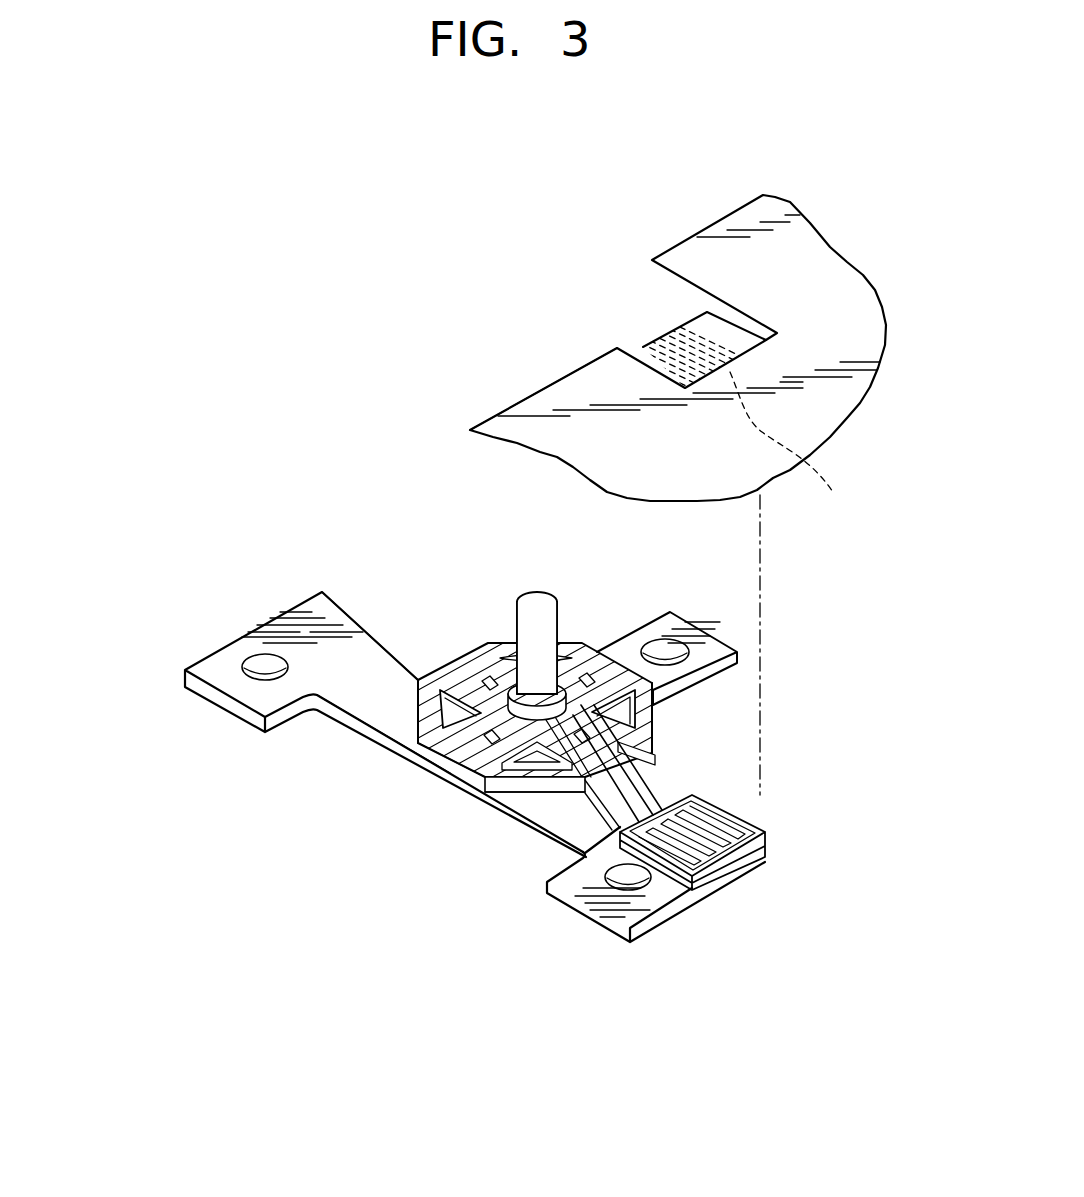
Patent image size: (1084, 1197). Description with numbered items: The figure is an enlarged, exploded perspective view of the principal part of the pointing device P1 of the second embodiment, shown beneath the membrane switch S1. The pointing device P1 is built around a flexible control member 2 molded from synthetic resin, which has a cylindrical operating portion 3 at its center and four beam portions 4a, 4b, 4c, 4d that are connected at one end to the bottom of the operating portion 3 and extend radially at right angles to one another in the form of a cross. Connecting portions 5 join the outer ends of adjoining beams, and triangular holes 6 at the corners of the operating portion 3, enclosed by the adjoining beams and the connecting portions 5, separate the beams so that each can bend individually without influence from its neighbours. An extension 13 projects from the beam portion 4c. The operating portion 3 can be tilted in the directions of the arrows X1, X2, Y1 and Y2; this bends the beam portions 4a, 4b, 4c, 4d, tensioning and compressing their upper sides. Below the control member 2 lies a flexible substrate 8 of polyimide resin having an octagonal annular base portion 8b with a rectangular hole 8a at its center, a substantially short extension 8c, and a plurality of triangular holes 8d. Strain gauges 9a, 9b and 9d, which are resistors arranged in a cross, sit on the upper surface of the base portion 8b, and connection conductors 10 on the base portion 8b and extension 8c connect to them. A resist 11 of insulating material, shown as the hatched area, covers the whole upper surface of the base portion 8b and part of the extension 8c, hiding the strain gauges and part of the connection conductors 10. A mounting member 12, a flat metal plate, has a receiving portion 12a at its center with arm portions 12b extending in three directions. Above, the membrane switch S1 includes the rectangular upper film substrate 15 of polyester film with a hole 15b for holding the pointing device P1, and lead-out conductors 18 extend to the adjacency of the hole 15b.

The flexible control member 2 is at (544, 598).
The cylindrical operating portion 3 is at (543, 593).
The beam portion 4a is at (422, 775).
The beam portion 4b is at (601, 655).
The beam portion 4c is at (603, 737).
The beam portion 4d is at (503, 645).
The connecting portion 5 is at (550, 793).
The triangular hole 6 is at (418, 702).
The flexible substrate 8 is at (602, 828).
The rectangular hole 8a is at (472, 777).
The octagonal annular base portion 8b is at (443, 773).
The extension 8c is at (768, 835).
The triangular hole 8d is at (450, 687).
The strain gauge 9a is at (455, 762).
The strain gauge 9b is at (590, 657).
The strain gauge 9d is at (410, 672).
The connection conductor 10 is at (713, 872).
The resist 11 is at (663, 780).
The mounting member 12 is at (198, 715).
The receiving portion 12a is at (357, 738).
The arm portion 12b is at (288, 638).
The extension 13 is at (680, 888).
The upper film substrate 15 is at (827, 402).
The hole 15b is at (633, 352).
The lead-out conductor 18 is at (787, 450).
The membrane switch S1 is at (865, 232).
The pointing device P1 is at (497, 872).
The tilting direction X1 is at (577, 582).
The tilting direction X2 is at (317, 728).
The tilting direction Y1 is at (480, 580).
The tilting direction Y2 is at (768, 750).